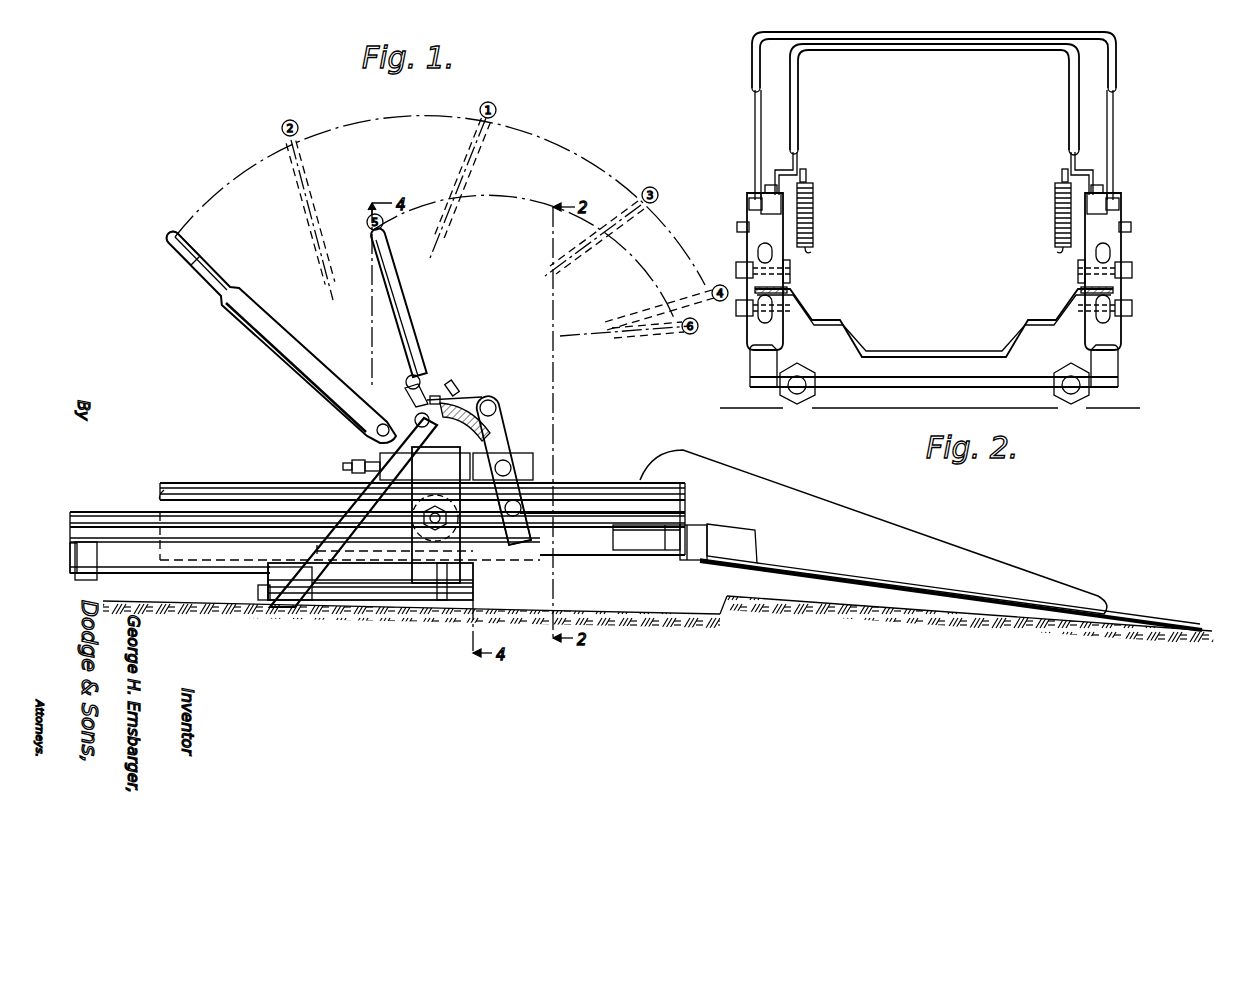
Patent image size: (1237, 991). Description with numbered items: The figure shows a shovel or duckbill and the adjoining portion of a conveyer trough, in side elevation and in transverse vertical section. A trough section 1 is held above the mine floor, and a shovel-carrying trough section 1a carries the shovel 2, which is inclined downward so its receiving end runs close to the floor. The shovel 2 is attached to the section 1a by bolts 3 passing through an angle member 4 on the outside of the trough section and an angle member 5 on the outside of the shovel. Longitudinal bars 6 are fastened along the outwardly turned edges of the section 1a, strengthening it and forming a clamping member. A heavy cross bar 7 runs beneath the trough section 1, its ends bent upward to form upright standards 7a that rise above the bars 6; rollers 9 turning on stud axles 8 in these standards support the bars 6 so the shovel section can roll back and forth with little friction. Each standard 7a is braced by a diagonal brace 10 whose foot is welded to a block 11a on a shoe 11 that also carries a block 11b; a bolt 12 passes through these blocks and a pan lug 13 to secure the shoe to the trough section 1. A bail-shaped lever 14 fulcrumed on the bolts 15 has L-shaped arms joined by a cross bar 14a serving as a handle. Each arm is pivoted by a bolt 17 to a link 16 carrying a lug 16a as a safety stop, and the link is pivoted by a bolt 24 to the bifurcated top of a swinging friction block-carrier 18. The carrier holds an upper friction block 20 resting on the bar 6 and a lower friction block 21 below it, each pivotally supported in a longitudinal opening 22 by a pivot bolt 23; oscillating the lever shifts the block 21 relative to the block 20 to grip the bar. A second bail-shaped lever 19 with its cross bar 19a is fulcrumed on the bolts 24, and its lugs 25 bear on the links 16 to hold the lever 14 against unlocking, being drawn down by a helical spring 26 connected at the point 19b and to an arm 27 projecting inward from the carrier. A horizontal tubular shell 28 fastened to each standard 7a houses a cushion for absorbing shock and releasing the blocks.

In FIG. 1, the trough section 1 is at (117, 517).
In FIG. 2, the trough section 1 is at (918, 362).
In FIG. 1, the shovel-carrying trough section 1a is at (607, 484).
In FIG. 2, the shovel-carrying trough section 1a is at (792, 292).
In FIG. 1, the shovel 2 is at (921, 540).
In FIG. 1, the bolt 3 is at (700, 548).
In FIG. 1, the angle member 4 is at (650, 540).
In FIG. 1, the angle member 5 is at (688, 548).
In FIG. 1, the longitudinal bar 6 is at (239, 483).
In FIG. 2, the cross bar 7 is at (893, 389).
In FIG. 1, the upright standard 7a is at (443, 575).
In FIG. 2, the upright standard 7a is at (750, 373).
In FIG. 1, the stud axle 8 is at (440, 527).
In FIG. 1, the roller 9 is at (412, 527).
In FIG. 1, the diagonal brace 10 is at (335, 524).
In FIG. 1, the shoe 11 is at (380, 592).
In FIG. 1, the block 11a is at (278, 572).
In FIG. 1, the block 11b is at (398, 586).
In FIG. 1, the bolt 12 is at (258, 592).
In FIG. 2, the bolt 12 is at (795, 399).
In FIG. 1, the pan lug 13 is at (345, 570).
In FIG. 1, the bail-shaped lever 14 is at (314, 201).
In FIG. 2, the bail-shaped lever 14 is at (756, 122).
In FIG. 1, the cross bar 14a is at (177, 246).
In FIG. 2, the cross bar 14a is at (782, 35).
In FIG. 1, the bolt 15 is at (417, 414).
In FIG. 2, the bolt 15 is at (738, 228).
In FIG. 1, the link 16 is at (458, 388).
In FIG. 2, the link 16 is at (760, 199).
In FIG. 1, the lug 16a is at (436, 394).
In FIG. 1, the bolt 17 is at (377, 437).
In FIG. 1, the friction block-carrier 18 is at (504, 429).
In FIG. 2, the friction block-carrier 18 is at (1112, 241).
In FIG. 1, the bail-shaped lever 19 is at (396, 302).
In FIG. 2, the bail-shaped lever 19 is at (798, 125).
In FIG. 2, the cross bar 19a is at (941, 45).
In FIG. 1, the spring attachment point 19b is at (404, 386).
In FIG. 2, the spring attachment point 19b is at (808, 173).
In FIG. 1, the upper friction block 20 is at (535, 463).
In FIG. 2, the upper friction block 20 is at (790, 266).
In FIG. 1, the lower friction block 21 is at (537, 514).
In FIG. 2, the lower friction block 21 is at (763, 313).
In FIG. 2, the longitudinal opening 22 is at (758, 251).
In FIG. 1, the pivot bolt 23 is at (513, 465).
In FIG. 2, the pivot bolt 23 is at (736, 270).
In FIG. 1, the pivot bolt 24 is at (496, 402).
In FIG. 2, the pivot bolt 24 is at (749, 205).
In FIG. 1, the lug 25 is at (425, 378).
In FIG. 2, the lug 25 is at (766, 188).
In FIG. 1, the helical spring 26 is at (460, 430).
In FIG. 2, the helical spring 26 is at (814, 208).
In FIG. 2, the arm 27 is at (812, 252).
In FIG. 1, the tubular shell 28 is at (462, 468).